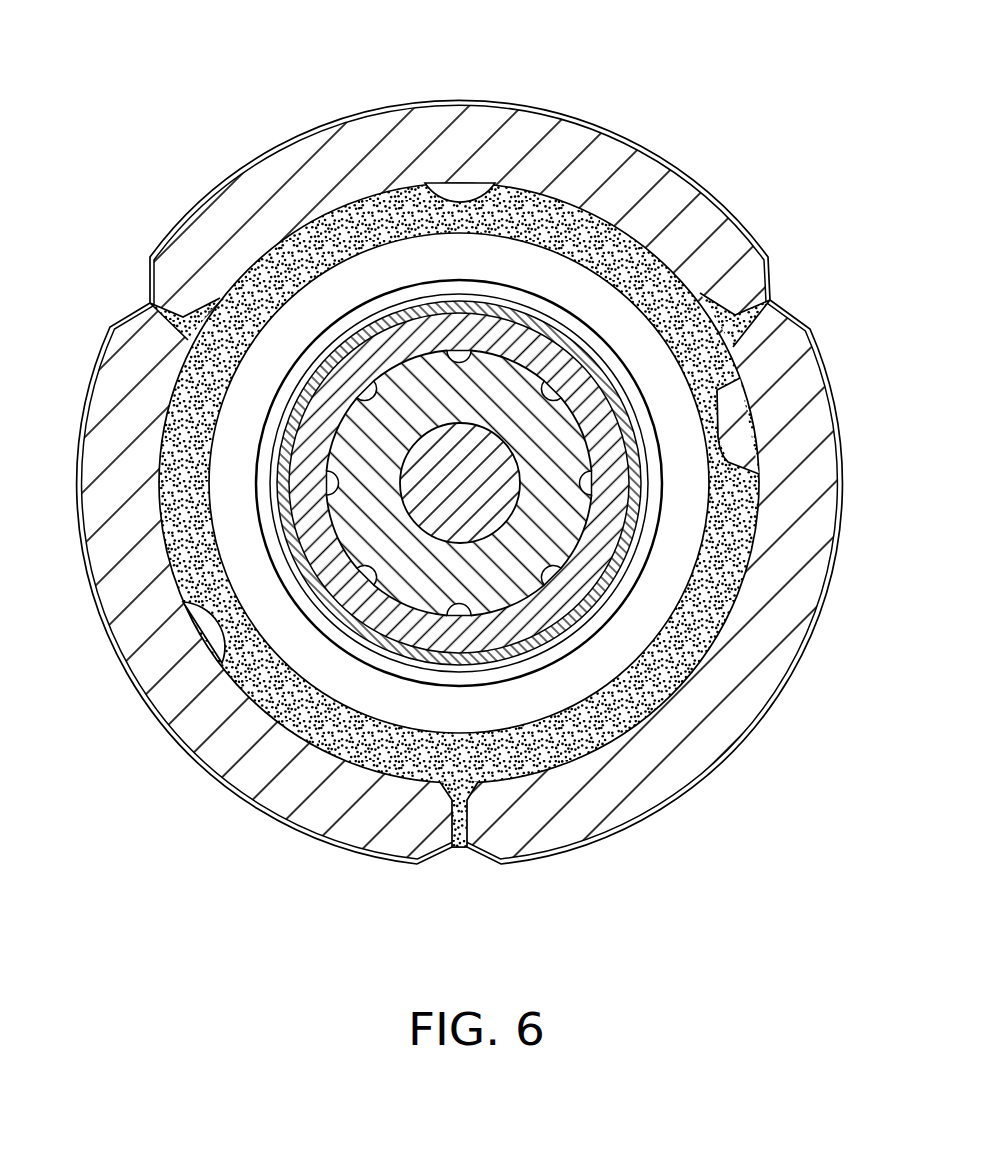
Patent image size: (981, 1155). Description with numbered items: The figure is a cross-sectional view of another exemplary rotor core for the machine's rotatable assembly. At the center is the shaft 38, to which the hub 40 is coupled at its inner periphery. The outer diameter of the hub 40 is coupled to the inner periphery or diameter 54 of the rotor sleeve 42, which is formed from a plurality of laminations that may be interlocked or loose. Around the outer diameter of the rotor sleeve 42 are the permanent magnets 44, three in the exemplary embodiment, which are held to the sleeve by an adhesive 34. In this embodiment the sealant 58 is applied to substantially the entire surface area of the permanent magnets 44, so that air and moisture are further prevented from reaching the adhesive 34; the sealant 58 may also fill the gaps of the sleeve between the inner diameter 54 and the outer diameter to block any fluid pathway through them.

The adhesive 34 is at (702, 292).
The shaft 38 is at (481, 494).
The hub 40 is at (436, 712).
The rotor sleeve 42 is at (742, 418).
The permanent magnets 44 is at (696, 214).
The inner periphery or diameter 54 is at (349, 252).
The sealant 58 is at (578, 240).